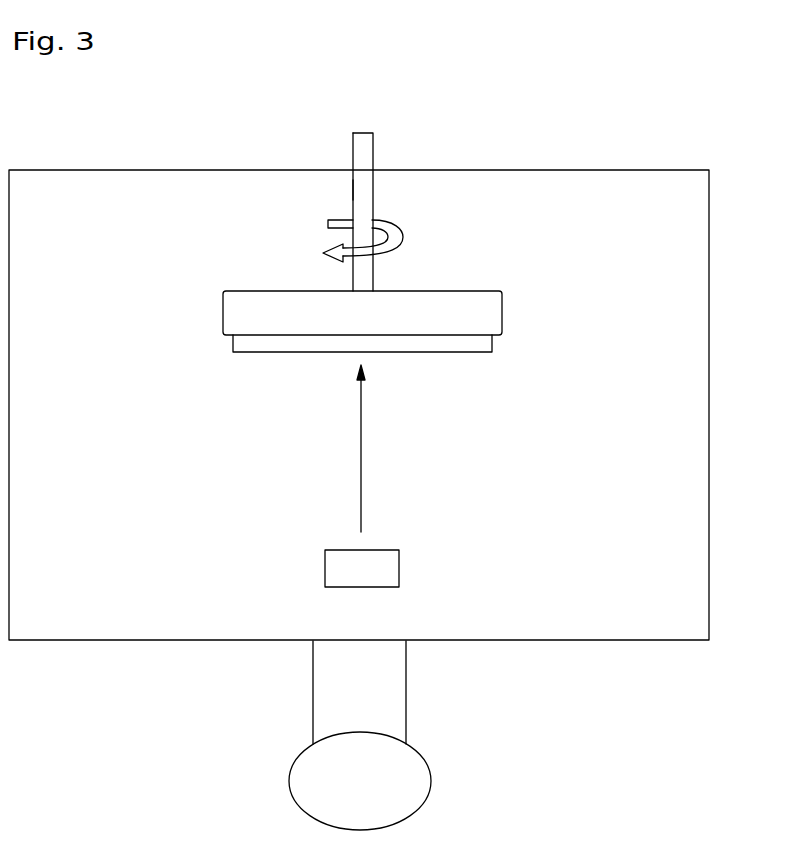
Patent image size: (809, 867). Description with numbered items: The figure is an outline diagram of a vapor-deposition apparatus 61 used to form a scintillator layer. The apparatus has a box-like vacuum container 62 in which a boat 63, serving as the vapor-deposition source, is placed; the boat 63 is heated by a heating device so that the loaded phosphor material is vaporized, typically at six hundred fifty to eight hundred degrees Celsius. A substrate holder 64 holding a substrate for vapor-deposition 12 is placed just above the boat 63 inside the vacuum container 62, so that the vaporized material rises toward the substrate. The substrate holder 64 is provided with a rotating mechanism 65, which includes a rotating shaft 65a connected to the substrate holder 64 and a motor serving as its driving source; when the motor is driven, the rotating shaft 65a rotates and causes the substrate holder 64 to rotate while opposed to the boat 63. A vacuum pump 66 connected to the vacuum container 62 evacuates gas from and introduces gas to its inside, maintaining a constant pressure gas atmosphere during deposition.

The substrate for vapor-deposition 12 is at (492, 340).
The vapor-deposition apparatus 61 is at (425, 156).
The vacuum container 62 is at (710, 252).
The boat (crucible) 63 is at (400, 567).
The substrate holder 64 is at (480, 291).
The rotating mechanism 65 is at (377, 193).
The rotating shaft 65a is at (355, 190).
The vacuum pump 66 is at (431, 775).